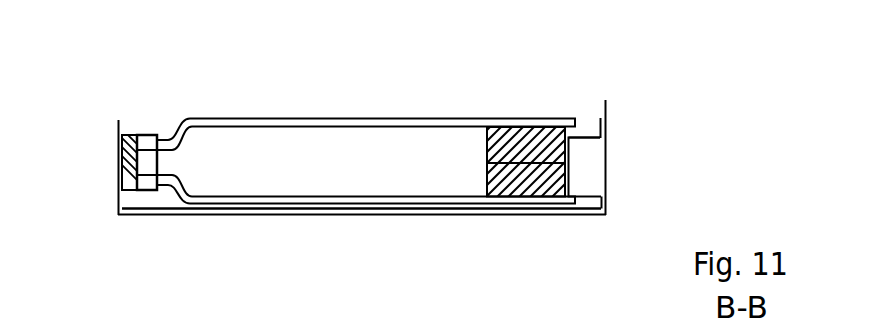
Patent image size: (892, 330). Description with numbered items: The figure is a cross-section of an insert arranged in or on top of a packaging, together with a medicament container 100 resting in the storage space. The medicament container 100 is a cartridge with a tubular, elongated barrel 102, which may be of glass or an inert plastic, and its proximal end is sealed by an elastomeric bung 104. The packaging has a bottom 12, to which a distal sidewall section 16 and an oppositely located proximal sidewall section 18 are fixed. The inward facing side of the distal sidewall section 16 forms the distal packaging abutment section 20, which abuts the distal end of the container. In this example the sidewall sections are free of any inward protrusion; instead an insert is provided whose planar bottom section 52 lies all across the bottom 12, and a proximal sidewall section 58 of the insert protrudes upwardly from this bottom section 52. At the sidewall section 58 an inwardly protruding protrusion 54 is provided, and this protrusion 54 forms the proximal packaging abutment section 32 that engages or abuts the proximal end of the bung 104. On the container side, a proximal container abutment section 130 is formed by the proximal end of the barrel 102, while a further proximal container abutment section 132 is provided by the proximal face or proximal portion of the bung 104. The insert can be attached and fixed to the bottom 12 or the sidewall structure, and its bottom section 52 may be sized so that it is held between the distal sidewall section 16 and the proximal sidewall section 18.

The medicament container 100 is at (303, 102).
The bottom 12 is at (223, 215).
The distal sidewall section 16 is at (118, 133).
The proximal sidewall section 18 is at (607, 105).
The distal packaging abutment section 20 is at (120, 124).
The proximal packaging abutment section 32 is at (487, 163).
The bottom section 52 is at (150, 208).
The protrusion 54 is at (585, 143).
The proximal sidewall section 58 is at (580, 172).
The barrel 102 is at (428, 123).
The bung 104 is at (518, 137).
The proximal container abutment section 130 is at (602, 203).
The proximal container abutment section 132 is at (570, 145).